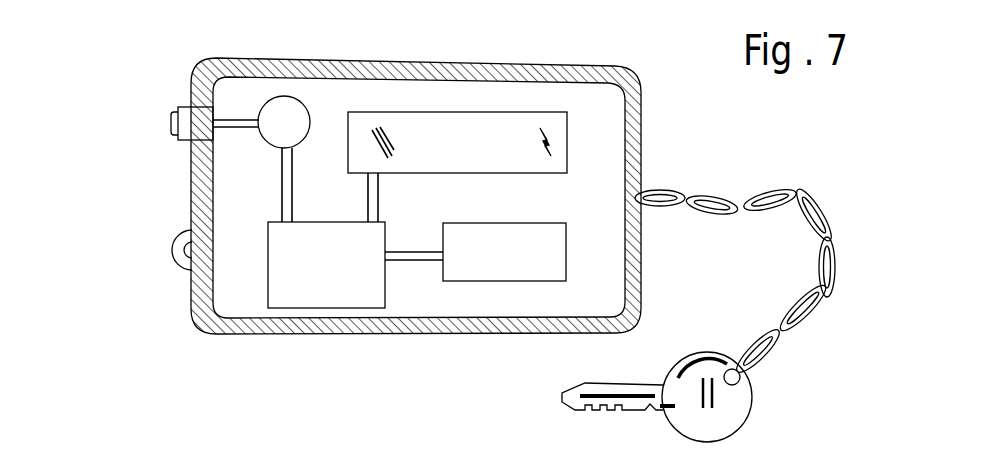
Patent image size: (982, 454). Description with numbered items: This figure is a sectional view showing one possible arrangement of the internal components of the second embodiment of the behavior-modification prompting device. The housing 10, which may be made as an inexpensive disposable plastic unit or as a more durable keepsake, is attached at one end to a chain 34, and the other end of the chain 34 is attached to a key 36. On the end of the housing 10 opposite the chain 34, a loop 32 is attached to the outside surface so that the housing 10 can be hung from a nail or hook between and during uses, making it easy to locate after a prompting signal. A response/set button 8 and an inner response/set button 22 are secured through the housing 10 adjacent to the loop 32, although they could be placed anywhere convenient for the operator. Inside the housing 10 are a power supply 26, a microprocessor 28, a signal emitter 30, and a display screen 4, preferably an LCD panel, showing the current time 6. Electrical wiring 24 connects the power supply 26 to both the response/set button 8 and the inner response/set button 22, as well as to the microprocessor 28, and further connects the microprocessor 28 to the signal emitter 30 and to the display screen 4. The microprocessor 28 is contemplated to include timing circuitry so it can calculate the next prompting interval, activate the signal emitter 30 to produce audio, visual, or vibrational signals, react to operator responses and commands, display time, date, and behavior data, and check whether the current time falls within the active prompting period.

The display screen 4 is at (557, 120).
The current time 6 is at (413, 112).
The response/set button 8 is at (183, 115).
The housing 10 is at (467, 66).
The inner response/set button 22 is at (160, 123).
The electrical wiring 24 is at (270, 178).
The power supply 26 is at (283, 113).
The microprocessor 28 is at (318, 295).
The signal emitter 30 is at (522, 278).
The loop 32 is at (175, 258).
The chain 34 is at (705, 192).
The key 36 is at (735, 402).